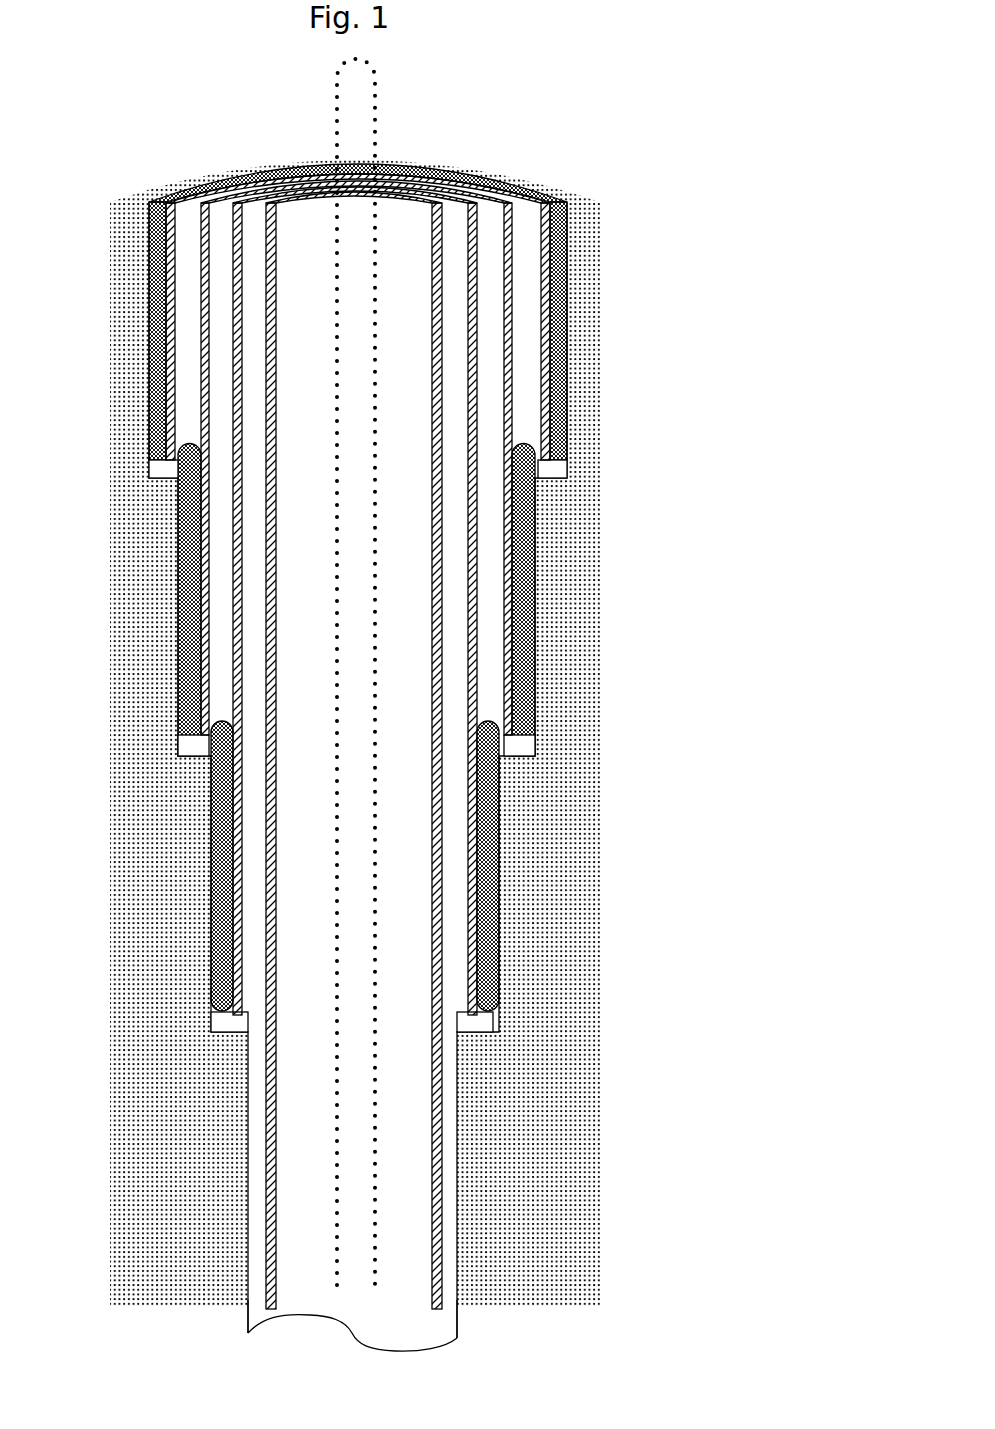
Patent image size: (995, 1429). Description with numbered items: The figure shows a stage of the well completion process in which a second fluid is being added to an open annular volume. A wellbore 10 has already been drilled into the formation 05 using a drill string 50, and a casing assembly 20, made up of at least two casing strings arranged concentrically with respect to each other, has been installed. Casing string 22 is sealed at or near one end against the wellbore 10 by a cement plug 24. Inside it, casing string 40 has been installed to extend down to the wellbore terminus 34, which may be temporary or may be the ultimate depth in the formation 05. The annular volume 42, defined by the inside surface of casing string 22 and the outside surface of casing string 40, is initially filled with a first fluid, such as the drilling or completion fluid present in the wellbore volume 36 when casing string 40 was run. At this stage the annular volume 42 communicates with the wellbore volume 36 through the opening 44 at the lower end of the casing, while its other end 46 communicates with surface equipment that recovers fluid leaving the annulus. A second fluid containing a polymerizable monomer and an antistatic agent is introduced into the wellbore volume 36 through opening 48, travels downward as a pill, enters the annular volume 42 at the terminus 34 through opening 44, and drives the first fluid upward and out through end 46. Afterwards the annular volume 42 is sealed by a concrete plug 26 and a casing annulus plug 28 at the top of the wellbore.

The formation 05 is at (530, 1105).
The wellbore 10 is at (147, 358).
The casing assembly 20 is at (445, 307).
The casing string 22 is at (238, 203).
The cement plug 24 is at (218, 963).
The concrete plug 26 is at (167, 168).
The casing annulus plug 28 is at (215, 687).
The wellbore terminus 34 is at (388, 1327).
The wellbore volume 36 is at (395, 1206).
The casing string 40 is at (273, 217).
The annular volume 42 is at (247, 842).
The opening 44 is at (253, 1317).
The other end of the annular volume 46 is at (255, 218).
The opening 48 is at (405, 228).
The drill string 50 is at (377, 73).